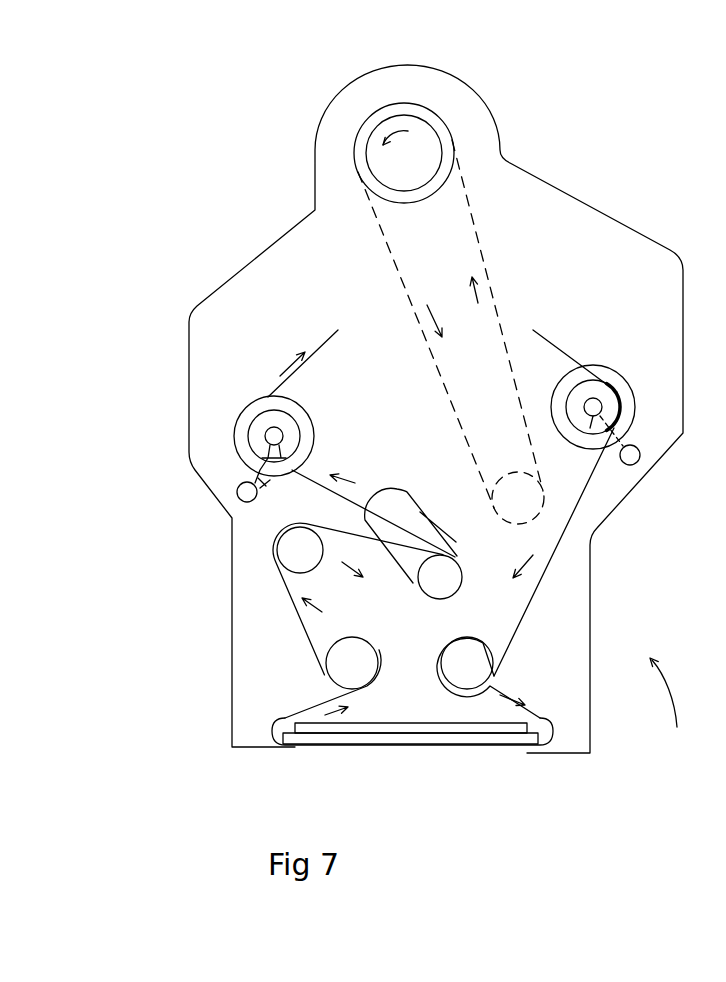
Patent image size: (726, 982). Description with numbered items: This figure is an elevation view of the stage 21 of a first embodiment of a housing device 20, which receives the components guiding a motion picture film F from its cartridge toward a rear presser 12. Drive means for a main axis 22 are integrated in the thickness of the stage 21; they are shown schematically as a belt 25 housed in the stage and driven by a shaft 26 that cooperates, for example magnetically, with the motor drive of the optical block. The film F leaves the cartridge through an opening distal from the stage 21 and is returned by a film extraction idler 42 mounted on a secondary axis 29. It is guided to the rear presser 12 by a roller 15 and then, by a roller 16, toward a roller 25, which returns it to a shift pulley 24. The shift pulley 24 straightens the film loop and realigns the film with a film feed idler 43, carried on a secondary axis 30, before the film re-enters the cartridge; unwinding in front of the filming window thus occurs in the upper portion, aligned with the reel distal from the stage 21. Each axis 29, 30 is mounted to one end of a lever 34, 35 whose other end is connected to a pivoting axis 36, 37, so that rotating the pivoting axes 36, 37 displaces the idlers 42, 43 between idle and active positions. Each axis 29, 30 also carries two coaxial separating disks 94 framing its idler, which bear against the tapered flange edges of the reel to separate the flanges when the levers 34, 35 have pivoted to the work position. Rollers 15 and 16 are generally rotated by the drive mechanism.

The rear presser 12 is at (398, 736).
The guiding roller 15 is at (473, 651).
The guiding roller 16 is at (327, 668).
The housing device 20 is at (670, 708).
The stage 21 is at (545, 196).
The main axis 22 is at (428, 142).
The shift pulley 24 is at (431, 587).
The guiding roller / belt 25 is at (483, 258).
The shaft 26 is at (510, 474).
The secondary axis 29 is at (595, 405).
The secondary axis 30 is at (276, 430).
The lever 34 is at (610, 447).
The lever 35 is at (267, 483).
The pivoting axis 36 is at (637, 462).
The pivoting axis 37 is at (238, 497).
The return idler 42 is at (572, 432).
The return idler 43 is at (298, 414).
The separating disk 94 is at (557, 398).
The film F is at (567, 343).